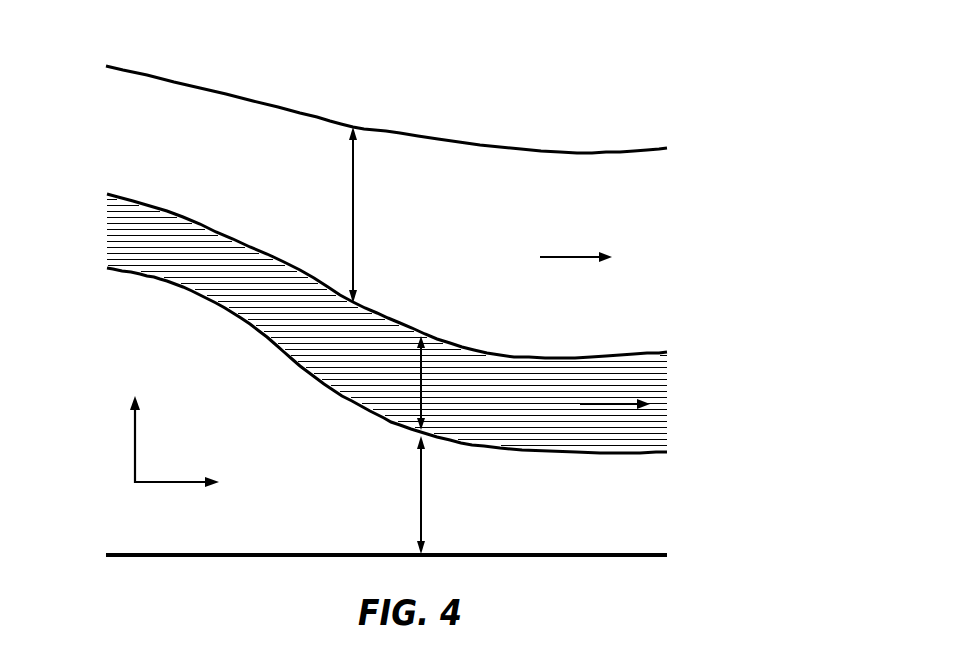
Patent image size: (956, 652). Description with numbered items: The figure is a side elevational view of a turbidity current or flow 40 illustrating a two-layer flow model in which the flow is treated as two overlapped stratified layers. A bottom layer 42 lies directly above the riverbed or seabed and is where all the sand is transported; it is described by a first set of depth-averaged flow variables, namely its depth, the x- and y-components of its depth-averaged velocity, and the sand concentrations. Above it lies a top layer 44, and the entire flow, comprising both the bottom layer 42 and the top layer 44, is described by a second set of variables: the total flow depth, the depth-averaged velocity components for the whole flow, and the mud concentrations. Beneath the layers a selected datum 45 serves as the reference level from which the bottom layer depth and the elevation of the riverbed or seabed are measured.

The turbidity current or flow 40 is at (127, 37).
The bottom layer 42 is at (107, 226).
The top layer 44 is at (107, 134).
The datum 45 is at (530, 553).